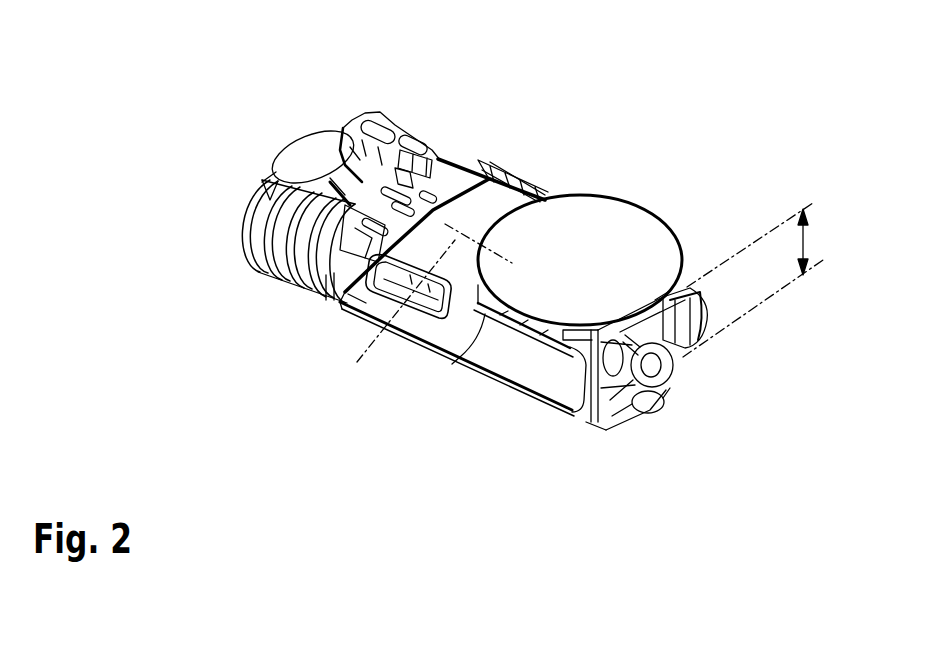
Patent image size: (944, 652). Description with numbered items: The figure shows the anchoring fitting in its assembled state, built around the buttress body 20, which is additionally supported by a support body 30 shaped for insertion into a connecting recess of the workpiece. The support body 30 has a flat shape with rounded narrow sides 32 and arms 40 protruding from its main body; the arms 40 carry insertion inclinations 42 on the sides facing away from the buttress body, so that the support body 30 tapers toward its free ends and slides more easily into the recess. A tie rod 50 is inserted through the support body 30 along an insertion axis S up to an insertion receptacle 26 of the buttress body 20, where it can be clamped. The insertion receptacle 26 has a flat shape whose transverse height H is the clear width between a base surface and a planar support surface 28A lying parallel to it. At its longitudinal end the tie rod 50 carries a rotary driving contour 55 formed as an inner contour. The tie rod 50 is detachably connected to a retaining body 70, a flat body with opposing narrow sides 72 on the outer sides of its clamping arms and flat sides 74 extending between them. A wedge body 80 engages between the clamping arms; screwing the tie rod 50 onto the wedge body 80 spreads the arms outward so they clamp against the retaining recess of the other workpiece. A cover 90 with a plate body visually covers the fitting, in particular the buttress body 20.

The buttress body 20 is at (594, 432).
The insertion receptacle 26 is at (634, 414).
The support surface 28A is at (687, 287).
The support body 30 is at (427, 354).
The narrow sides 32 is at (458, 375).
The arms 40 is at (705, 307).
The insertion inclinations 42 is at (547, 412).
The tie rod 50 is at (668, 370).
The rotary driving contour 55 is at (672, 363).
The retaining body 70 is at (384, 113).
The narrow sides 72 is at (276, 283).
The flat sides 74 is at (422, 152).
The wedge body 80 is at (308, 154).
The cover 90 is at (613, 203).
The insertion axis S is at (428, 309).
The transverse height H is at (807, 240).